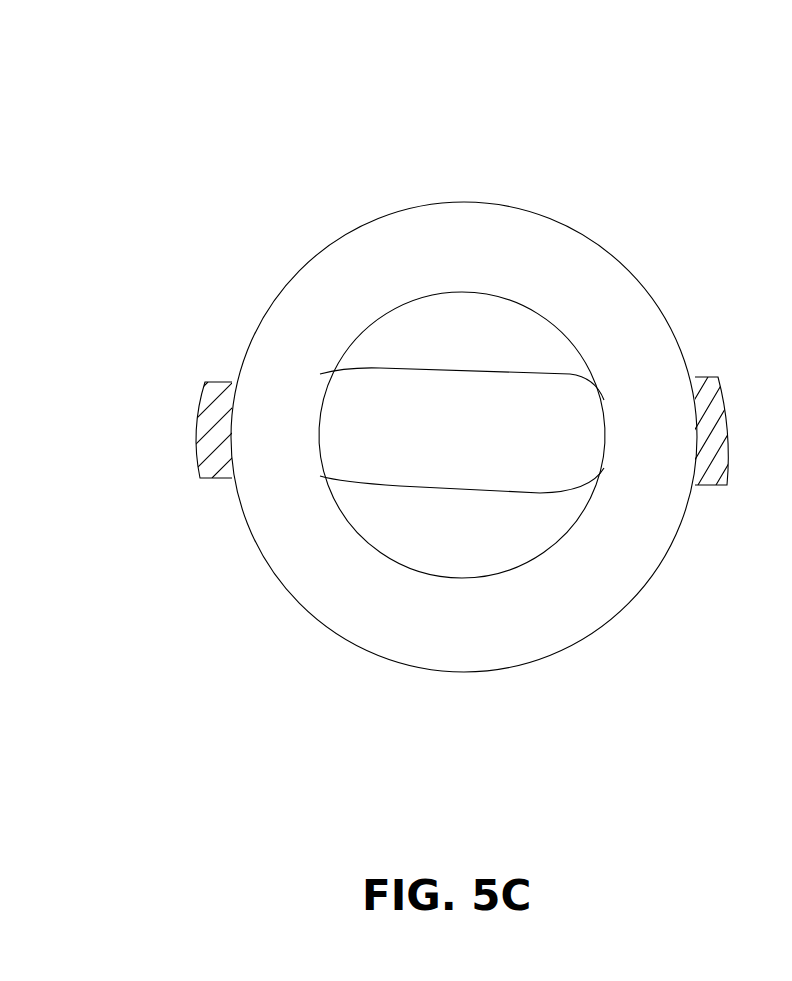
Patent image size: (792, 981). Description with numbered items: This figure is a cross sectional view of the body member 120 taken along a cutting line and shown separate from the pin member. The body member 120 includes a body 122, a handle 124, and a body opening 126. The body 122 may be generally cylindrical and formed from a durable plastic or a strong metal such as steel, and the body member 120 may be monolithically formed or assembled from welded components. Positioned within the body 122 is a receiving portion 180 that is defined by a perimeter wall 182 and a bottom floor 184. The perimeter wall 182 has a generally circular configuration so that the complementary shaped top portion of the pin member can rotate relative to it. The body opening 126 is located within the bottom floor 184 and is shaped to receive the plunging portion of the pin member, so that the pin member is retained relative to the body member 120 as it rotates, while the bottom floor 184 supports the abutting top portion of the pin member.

The body member 120 is at (219, 78).
The body 122 is at (420, 247).
The handle 124 is at (214, 432).
The body opening 126 is at (388, 415).
The receiving portion 180 is at (455, 323).
The perimeter wall 182 is at (442, 380).
The bottom floor 184 is at (460, 515).